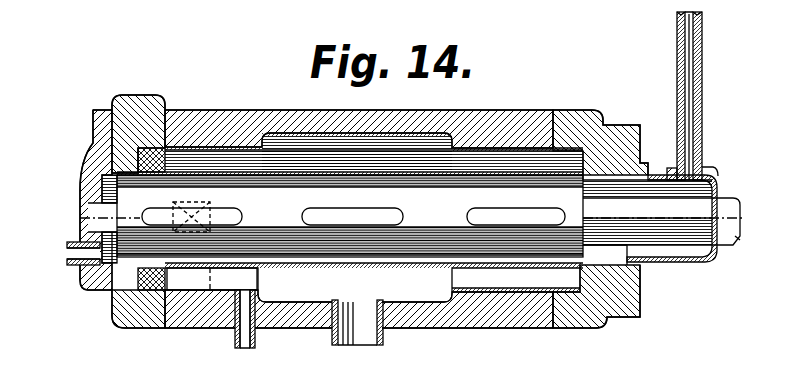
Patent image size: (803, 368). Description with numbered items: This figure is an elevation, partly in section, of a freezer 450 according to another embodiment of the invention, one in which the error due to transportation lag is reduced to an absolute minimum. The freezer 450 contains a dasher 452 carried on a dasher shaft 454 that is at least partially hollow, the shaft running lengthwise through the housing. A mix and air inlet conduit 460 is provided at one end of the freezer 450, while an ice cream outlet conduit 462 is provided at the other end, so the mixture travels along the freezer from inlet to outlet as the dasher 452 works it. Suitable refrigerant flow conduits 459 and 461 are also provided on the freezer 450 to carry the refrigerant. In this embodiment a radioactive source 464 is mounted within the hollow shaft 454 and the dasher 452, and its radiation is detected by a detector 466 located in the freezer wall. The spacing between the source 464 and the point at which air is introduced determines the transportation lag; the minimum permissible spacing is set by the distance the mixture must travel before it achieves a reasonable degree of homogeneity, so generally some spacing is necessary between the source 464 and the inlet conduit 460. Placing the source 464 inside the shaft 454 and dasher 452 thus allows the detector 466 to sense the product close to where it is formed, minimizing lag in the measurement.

The freezer 450 is at (521, 110).
The dasher 452 is at (368, 245).
The dasher shaft 454 is at (96, 206).
The refrigerant flow conduit 459 is at (383, 337).
The mix and air inlet conduit 460 is at (703, 53).
The refrigerant flow conduit 461 is at (257, 338).
The ice cream outlet conduit 462 is at (67, 258).
The radioactive source 464 is at (210, 206).
The detector 466 is at (187, 303).